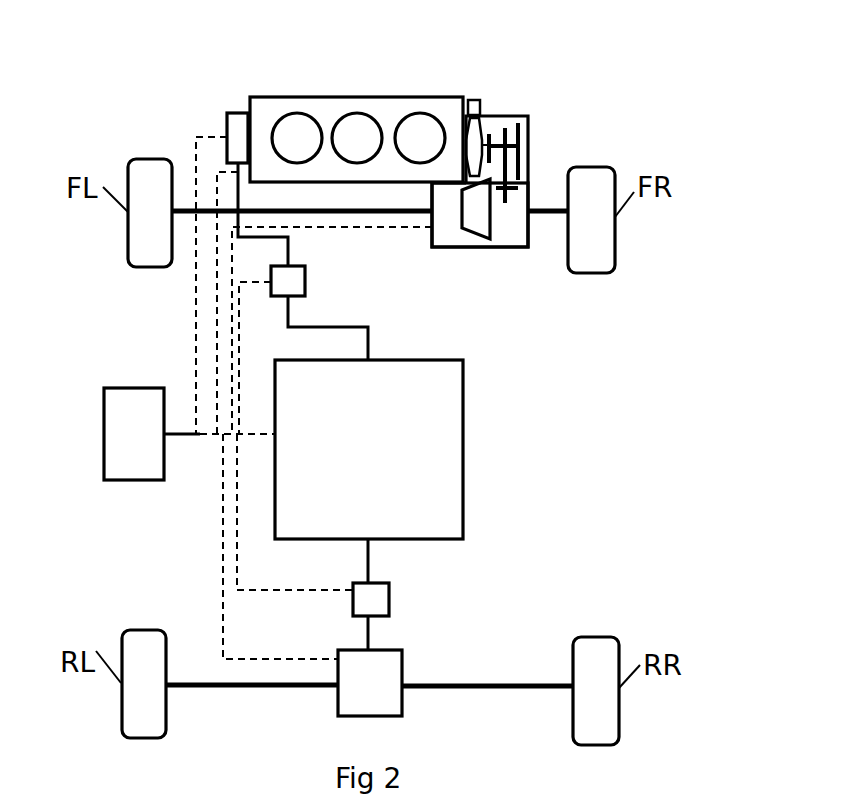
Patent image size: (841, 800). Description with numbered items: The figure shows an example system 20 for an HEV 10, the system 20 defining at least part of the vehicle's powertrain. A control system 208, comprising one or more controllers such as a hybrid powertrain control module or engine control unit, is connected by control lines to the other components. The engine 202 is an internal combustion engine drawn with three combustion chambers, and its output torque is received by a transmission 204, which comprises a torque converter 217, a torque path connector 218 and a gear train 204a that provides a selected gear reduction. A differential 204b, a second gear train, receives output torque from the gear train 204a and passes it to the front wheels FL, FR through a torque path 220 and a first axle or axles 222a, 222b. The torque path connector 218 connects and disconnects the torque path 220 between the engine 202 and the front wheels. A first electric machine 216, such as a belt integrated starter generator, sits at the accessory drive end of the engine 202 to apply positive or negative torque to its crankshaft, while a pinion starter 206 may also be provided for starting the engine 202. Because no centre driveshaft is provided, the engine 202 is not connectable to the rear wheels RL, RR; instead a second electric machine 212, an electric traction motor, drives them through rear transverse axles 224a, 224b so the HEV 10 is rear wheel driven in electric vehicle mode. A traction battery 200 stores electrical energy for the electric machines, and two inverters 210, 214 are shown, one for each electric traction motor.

The HEV 10 is at (638, 35).
The system 20 is at (592, 108).
The traction battery 200 is at (463, 450).
The engine 202 is at (327, 96).
The transmission 204 is at (494, 140).
The gear train 204a is at (518, 154).
The differential 204b is at (492, 226).
The pinion starter 206 is at (473, 100).
The control system 208 is at (104, 434).
The inverter 210 is at (389, 600).
The second electric machine 212 is at (402, 705).
The inverter 214 is at (305, 280).
The first electric machine 216 is at (240, 112).
The torque converter 217 is at (478, 128).
The torque path connector 218 is at (516, 122).
The torque path 220 is at (408, 215).
The first axle 222a is at (188, 215).
The first axle 222b is at (564, 215).
The rear transverse axle 224a is at (207, 682).
The rear transverse axle 224b is at (505, 683).